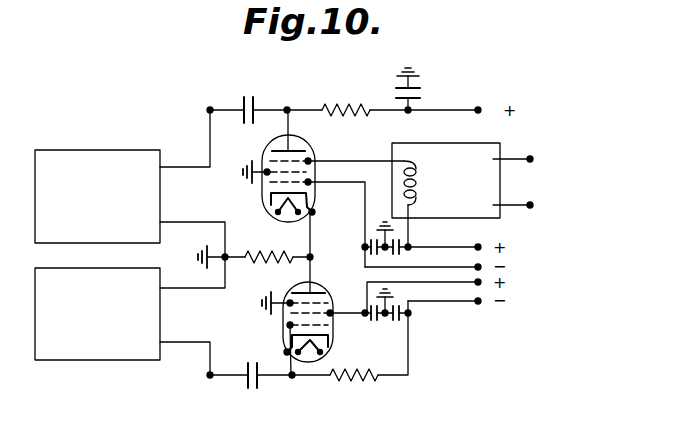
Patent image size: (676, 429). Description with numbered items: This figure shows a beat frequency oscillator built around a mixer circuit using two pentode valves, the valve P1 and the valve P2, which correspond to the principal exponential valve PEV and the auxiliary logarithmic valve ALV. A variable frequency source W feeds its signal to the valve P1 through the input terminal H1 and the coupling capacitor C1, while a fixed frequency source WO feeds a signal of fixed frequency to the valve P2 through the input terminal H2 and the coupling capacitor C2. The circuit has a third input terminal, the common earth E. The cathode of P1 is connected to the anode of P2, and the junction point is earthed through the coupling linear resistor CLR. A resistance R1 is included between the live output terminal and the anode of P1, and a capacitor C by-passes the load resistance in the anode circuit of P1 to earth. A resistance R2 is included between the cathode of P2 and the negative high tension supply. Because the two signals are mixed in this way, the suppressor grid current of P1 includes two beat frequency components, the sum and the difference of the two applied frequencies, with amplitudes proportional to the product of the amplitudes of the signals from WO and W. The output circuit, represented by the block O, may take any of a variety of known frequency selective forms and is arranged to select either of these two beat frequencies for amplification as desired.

The variable frequency source W is at (97, 196).
The fixed frequency source WO is at (97, 314).
The input terminal H1 is at (186, 135).
The input terminal H2 is at (186, 370).
The coupling capacitor C1 is at (250, 99).
The coupling capacitor C2 is at (252, 387).
The resistance R1 is at (384, 100).
The resistance R2 is at (350, 351).
The capacitor C is at (417, 89).
The pentode valve P1 is at (297, 183).
The pentode valve P2 is at (324, 316).
The principal exponential valve PEV is at (254, 172).
The auxiliary logarithmic valve ALV is at (256, 304).
The common earth terminal E is at (194, 255).
The coupling linear resistor CLR is at (269, 247).
The output circuit O is at (467, 167).